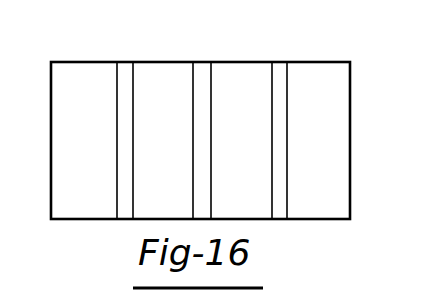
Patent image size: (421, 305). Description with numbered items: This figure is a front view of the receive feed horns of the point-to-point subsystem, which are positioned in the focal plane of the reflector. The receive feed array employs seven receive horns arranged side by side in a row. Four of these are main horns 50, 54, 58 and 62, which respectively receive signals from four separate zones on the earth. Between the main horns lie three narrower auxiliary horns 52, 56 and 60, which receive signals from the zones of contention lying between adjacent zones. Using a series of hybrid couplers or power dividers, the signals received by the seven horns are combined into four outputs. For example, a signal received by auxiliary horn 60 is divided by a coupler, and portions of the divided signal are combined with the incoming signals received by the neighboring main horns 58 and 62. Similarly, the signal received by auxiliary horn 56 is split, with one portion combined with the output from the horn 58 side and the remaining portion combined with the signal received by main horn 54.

The main horn 50 is at (333, 157).
The auxiliary horn 52 is at (278, 77).
The main horn 54 is at (253, 158).
The auxiliary horn 56 is at (203, 70).
The main horn 58 is at (178, 158).
The auxiliary horn 60 is at (125, 70).
The main horn 62 is at (94, 159).